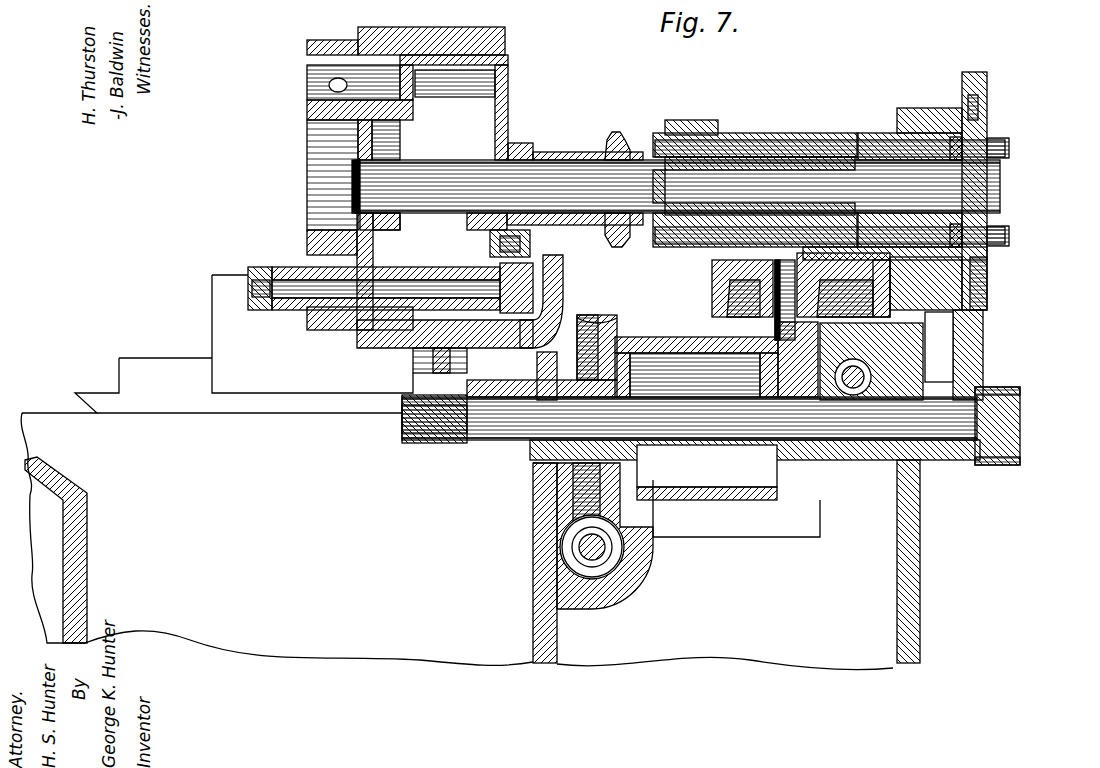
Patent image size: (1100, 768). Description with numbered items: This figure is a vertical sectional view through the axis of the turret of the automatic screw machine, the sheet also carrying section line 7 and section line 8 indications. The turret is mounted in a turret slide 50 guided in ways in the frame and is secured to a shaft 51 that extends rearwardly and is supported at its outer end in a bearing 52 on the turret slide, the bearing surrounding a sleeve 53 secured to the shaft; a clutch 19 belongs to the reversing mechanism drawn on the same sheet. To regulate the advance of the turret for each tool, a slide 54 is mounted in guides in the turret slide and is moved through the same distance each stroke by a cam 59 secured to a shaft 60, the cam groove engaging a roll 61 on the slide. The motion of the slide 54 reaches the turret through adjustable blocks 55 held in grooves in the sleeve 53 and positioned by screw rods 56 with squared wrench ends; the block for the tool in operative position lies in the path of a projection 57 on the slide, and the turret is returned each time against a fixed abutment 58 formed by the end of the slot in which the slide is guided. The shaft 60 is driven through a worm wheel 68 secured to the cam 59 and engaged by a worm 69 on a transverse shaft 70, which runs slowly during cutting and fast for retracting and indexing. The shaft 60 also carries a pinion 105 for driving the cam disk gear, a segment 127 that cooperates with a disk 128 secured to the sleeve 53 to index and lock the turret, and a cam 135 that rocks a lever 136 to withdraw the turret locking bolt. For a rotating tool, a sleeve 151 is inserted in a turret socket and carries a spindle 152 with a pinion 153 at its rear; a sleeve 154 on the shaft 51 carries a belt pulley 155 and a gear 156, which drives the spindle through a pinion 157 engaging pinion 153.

The section line 7 is at (839, 76).
The section line 8— 8 is at (452, 490).
The clutch 19 is at (505, 110).
The turret slide 50 is at (382, 350).
The shaft 51 is at (676, 195).
The bearing 52 is at (910, 108).
The sleeve 53 is at (878, 133).
The slide 54 is at (712, 287).
The blocks 55 is at (690, 122).
The screw rods 56 is at (780, 136).
The projection 57 is at (846, 292).
The fixed abutment 58 is at (880, 285).
The cam 59 is at (708, 490).
The shaft 60 is at (690, 415).
The roll 61 is at (775, 320).
The worm wheel 68 is at (617, 325).
The worm 69 is at (610, 535).
The transverse shaft 70 is at (612, 552).
The pinion 105 is at (1010, 390).
The segment 127 is at (985, 352).
The disk 128 is at (988, 270).
The cam 135 is at (435, 445).
The lever 136 is at (438, 372).
The sleeve 151 is at (292, 310).
The spindle 152 is at (305, 280).
The pinion 153 is at (548, 295).
The sleeve 154 is at (572, 150).
The pulley 155 is at (620, 135).
The gear 156 is at (530, 143).
The pinion 157 is at (530, 237).